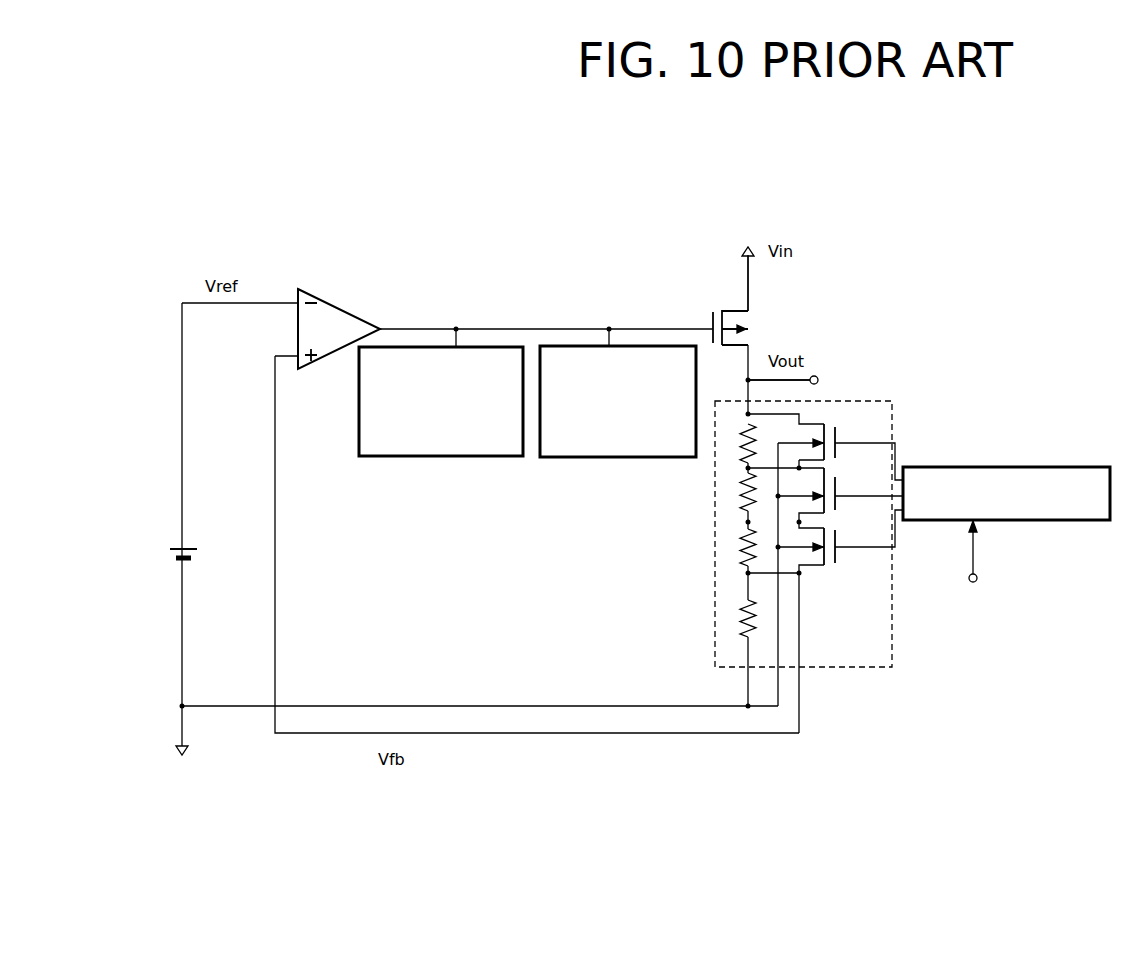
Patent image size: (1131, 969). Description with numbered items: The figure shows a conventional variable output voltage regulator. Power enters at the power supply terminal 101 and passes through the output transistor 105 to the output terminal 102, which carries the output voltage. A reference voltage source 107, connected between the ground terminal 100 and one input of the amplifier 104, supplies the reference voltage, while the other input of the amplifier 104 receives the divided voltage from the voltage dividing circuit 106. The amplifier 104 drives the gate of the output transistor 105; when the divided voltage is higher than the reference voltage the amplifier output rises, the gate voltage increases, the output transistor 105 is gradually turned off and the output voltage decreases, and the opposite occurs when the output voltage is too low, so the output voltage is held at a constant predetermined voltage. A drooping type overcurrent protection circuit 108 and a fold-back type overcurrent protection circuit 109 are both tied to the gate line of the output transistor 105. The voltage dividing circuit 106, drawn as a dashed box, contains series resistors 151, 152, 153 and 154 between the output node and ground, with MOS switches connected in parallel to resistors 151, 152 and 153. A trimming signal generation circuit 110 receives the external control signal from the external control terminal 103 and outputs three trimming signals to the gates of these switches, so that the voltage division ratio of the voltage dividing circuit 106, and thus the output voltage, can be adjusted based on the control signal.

The ground terminal 100 is at (204, 747).
The power supply terminal 101 is at (718, 271).
The output terminal 102 is at (807, 366).
The external control terminal 103 is at (994, 569).
The amplifier 104 is at (363, 311).
The output transistor 105 is at (774, 309).
The voltage dividing circuit 106 is at (811, 556).
The reference voltage source 107 is at (157, 518).
The drooping type overcurrent protection circuit 108 is at (441, 436).
The fold-back type overcurrent protection circuit 109 is at (608, 435).
The trimming signal generation circuit 110 is at (1006, 460).
The resistor 151 is at (703, 468).
The resistor 152 is at (703, 520).
The resistor 153 is at (703, 577).
The resistor 154 is at (703, 641).